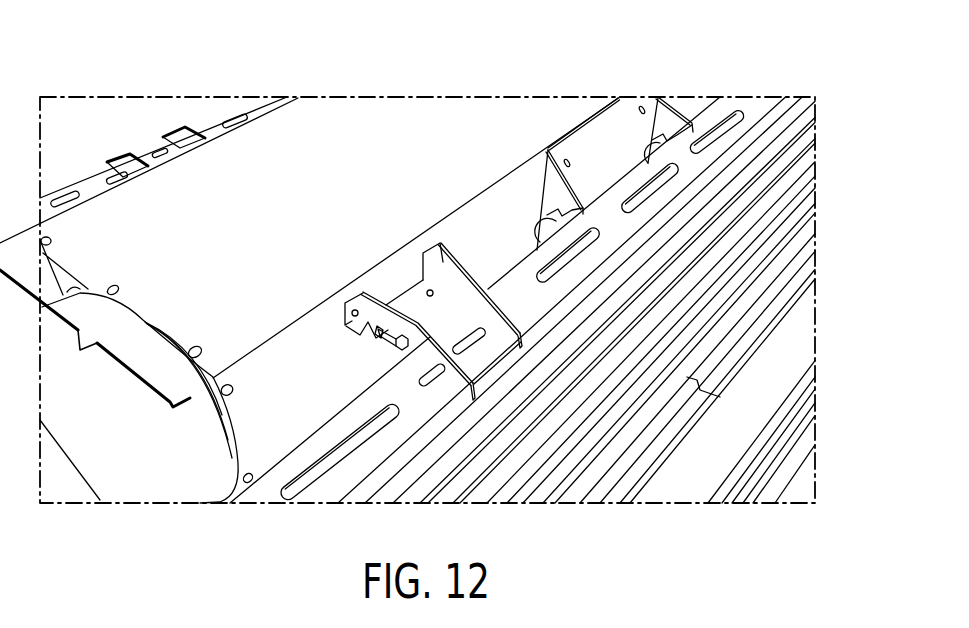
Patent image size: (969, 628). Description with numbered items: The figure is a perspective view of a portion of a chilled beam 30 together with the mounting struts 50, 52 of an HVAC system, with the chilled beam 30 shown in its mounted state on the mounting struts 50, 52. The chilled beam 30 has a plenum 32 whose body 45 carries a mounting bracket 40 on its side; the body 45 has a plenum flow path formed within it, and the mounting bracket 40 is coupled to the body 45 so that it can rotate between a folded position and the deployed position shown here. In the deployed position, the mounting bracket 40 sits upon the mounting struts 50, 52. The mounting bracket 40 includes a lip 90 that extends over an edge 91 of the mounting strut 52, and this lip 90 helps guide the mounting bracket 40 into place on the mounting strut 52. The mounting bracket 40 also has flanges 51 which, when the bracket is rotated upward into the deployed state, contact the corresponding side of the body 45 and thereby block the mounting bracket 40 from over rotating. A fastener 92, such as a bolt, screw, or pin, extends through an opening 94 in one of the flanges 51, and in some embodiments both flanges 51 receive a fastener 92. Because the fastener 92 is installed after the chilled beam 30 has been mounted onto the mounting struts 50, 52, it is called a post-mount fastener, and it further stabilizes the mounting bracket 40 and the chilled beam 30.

The chilled beam 30 is at (473, 80).
The plenum 32 is at (127, 370).
The mounting bracket 40 is at (188, 120).
The body 45 is at (350, 122).
The mounting strut 50 is at (87, 183).
The flange 51 is at (351, 303).
The mounting strut 52 is at (635, 183).
The lip 90 is at (502, 367).
The edge 91 is at (588, 277).
The fastener 92 is at (395, 343).
The opening 94 is at (350, 322).